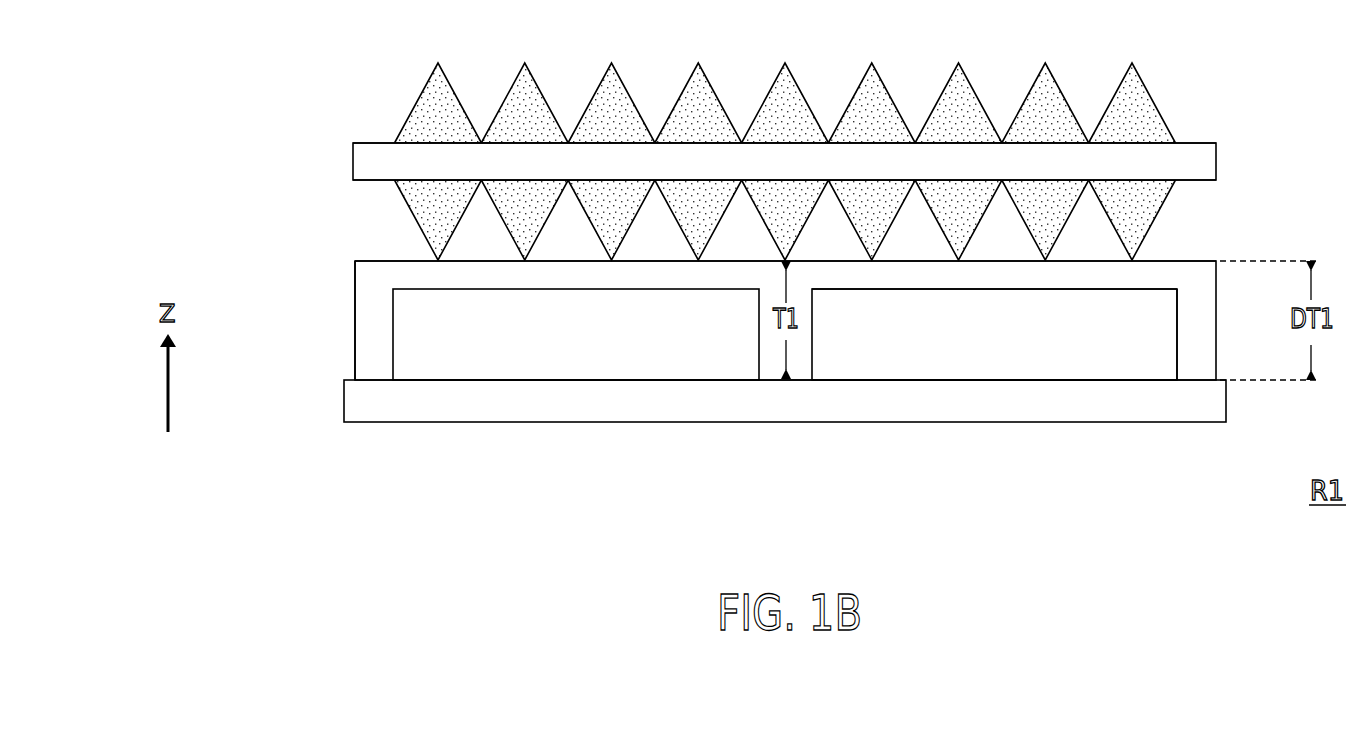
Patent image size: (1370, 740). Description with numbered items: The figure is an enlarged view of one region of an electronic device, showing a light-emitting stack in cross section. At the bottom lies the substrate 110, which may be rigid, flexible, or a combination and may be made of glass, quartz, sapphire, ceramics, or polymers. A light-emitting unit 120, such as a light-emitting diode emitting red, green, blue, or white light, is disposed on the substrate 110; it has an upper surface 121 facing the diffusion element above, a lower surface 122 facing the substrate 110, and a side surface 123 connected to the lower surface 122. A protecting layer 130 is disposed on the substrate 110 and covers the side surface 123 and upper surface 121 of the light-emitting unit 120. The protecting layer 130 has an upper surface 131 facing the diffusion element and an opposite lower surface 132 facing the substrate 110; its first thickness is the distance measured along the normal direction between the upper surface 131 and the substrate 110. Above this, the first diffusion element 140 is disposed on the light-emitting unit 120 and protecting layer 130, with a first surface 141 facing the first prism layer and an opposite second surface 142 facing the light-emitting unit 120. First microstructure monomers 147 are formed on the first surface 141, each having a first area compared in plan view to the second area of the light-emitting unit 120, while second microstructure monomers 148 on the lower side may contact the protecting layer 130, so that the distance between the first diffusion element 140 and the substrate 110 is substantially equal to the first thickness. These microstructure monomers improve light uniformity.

The substrate 110 is at (1210, 402).
The light-emitting unit 120 is at (617, 347).
The upper surface 121 is at (1164, 285).
The lower surface 122 is at (1154, 386).
The side surface 123 is at (1183, 337).
The protecting layer 130 is at (368, 327).
The upper surface 131 is at (384, 258).
The lower surface 132 is at (375, 386).
The first diffusion element 140 is at (1203, 166).
The first surface 141 is at (1198, 138).
The second surface 142 is at (1198, 184).
The first microstructure monomer 147 is at (428, 107).
The second microstructure monomer 148 is at (415, 191).